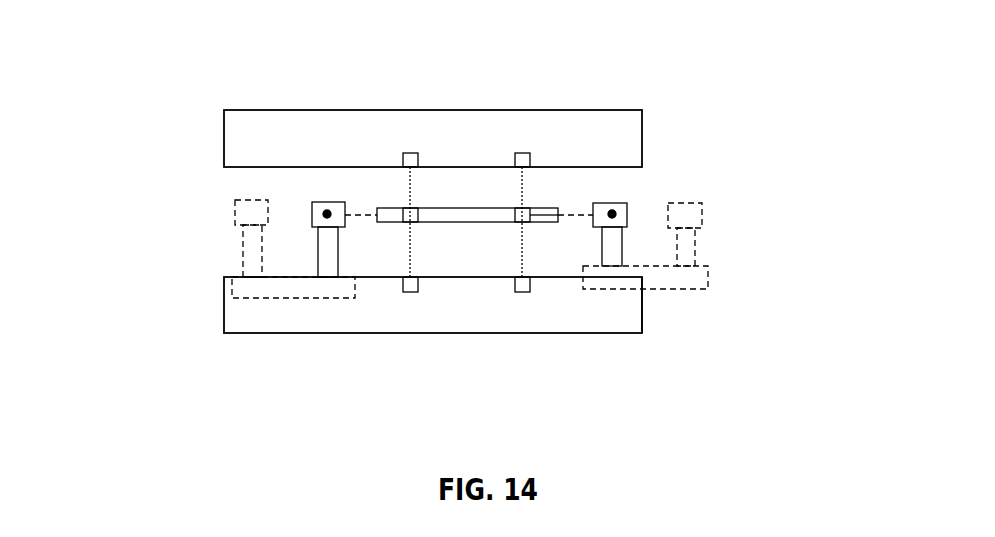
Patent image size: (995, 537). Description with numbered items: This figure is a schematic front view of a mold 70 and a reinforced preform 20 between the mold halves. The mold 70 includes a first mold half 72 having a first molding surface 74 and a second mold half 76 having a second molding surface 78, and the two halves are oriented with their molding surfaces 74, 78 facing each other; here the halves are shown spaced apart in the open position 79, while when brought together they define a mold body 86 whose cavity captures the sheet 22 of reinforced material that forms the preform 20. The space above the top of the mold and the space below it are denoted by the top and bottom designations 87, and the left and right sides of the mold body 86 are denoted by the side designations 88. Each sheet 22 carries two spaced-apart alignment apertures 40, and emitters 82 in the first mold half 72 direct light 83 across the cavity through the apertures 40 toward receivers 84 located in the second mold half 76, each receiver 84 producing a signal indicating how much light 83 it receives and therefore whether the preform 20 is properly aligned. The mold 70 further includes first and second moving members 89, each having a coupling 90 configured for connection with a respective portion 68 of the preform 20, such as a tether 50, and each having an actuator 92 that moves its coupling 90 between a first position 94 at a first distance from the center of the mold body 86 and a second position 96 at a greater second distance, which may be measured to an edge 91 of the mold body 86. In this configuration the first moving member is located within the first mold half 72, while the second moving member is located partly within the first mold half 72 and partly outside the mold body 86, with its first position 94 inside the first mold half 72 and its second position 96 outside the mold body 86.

The reinforced preform 20 is at (590, 125).
The sheet of reinforced material 22 is at (547, 210).
The alignment aperture 40 is at (408, 208).
The tether 50 is at (583, 213).
The portion of the reinforced preform 68 is at (612, 210).
The mold 70 is at (121, 55).
The first mold half 72 is at (482, 315).
The first molding surface 74 is at (502, 277).
The second mold half 76 is at (482, 151).
The second molding surface 78 is at (496, 128).
The open position 79 is at (185, 83).
The emitter 82 is at (410, 290).
The light 83 is at (522, 207).
The receiver 84 is at (407, 153).
The mold body 86 is at (770, 72).
The top and bottom directions 87 is at (329, 110).
The left and right sides 88 is at (108, 231).
The moving members 89 is at (195, 185).
The coupling 90 is at (480, 238).
The edge of the mold body 91 is at (642, 305).
The actuator 92 is at (290, 298).
The first position 94 is at (473, 238).
The second position 96 is at (238, 215).